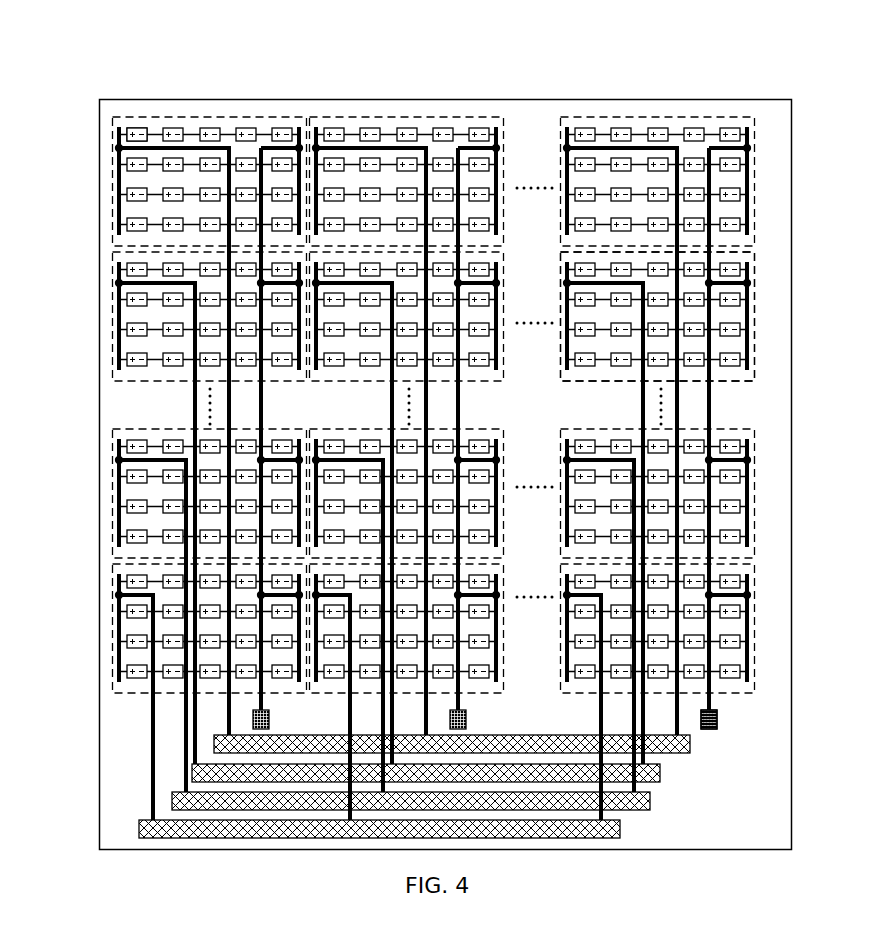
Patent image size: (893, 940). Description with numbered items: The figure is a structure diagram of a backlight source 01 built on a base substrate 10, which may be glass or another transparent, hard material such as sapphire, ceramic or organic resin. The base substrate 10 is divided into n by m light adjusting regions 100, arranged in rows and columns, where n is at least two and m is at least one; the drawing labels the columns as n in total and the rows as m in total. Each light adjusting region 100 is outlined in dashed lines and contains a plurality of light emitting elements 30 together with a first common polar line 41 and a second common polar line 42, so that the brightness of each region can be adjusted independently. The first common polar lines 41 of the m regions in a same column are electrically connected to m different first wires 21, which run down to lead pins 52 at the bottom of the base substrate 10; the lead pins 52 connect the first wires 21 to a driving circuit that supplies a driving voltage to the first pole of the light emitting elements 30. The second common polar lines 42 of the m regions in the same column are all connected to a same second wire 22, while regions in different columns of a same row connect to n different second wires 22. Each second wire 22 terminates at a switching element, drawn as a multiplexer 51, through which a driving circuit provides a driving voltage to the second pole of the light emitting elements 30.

The backlight source 01 is at (99, 24).
The base substrate 10 is at (777, 180).
The light adjusting region 100 is at (752, 340).
The first wire 21 is at (187, 147).
The second wire 22 is at (275, 147).
The light emitting element 30 is at (136, 138).
The first common polar line 41 is at (120, 175).
The second common polar line 42 is at (302, 128).
The multiplexer 51 is at (718, 727).
The lead pin 52 is at (650, 798).